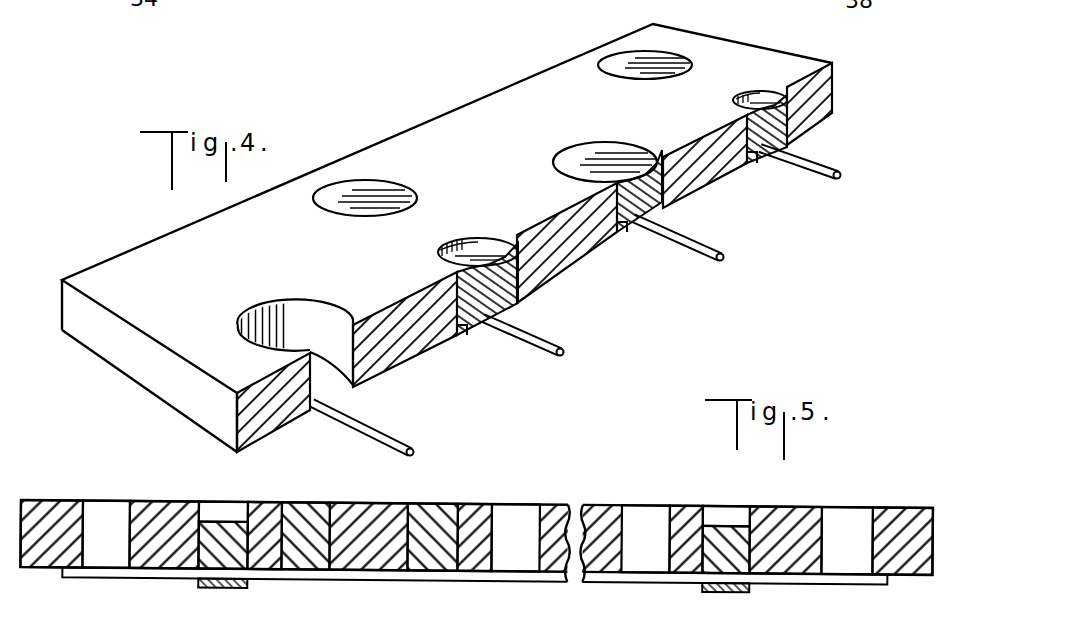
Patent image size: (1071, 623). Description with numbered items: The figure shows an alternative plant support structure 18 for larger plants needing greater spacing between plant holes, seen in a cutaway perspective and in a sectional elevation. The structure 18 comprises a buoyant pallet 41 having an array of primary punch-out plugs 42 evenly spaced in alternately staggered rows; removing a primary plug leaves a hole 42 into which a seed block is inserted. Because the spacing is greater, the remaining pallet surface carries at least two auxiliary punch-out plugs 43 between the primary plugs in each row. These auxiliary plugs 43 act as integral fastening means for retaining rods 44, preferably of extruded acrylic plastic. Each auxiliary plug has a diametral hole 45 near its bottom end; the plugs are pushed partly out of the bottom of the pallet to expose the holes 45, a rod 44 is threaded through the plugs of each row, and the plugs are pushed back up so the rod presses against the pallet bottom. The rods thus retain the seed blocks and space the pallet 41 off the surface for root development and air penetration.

In FIG. 4, the plant support structure 18 is at (150, 402).
In FIG. 5, the plant support structure 18 is at (562, 496).
In FIG. 4, the buoyant pallet 41 is at (834, 92).
In FIG. 5, the buoyant pallet 41 is at (362, 500).
In FIG. 4, the primary punch-out plugs 42 is at (343, 188).
In FIG. 5, the primary punch-out plugs 42 is at (310, 503).
In FIG. 4, the auxiliary punch-out plugs 43 is at (478, 248).
In FIG. 5, the auxiliary punch-out plugs 43 is at (223, 516).
In FIG. 4, the rods 44 is at (540, 337).
In FIG. 5, the rods 44 is at (127, 573).
In FIG. 4, the diametral hole 45 is at (497, 327).
In FIG. 5, the diametral hole 45 is at (248, 573).